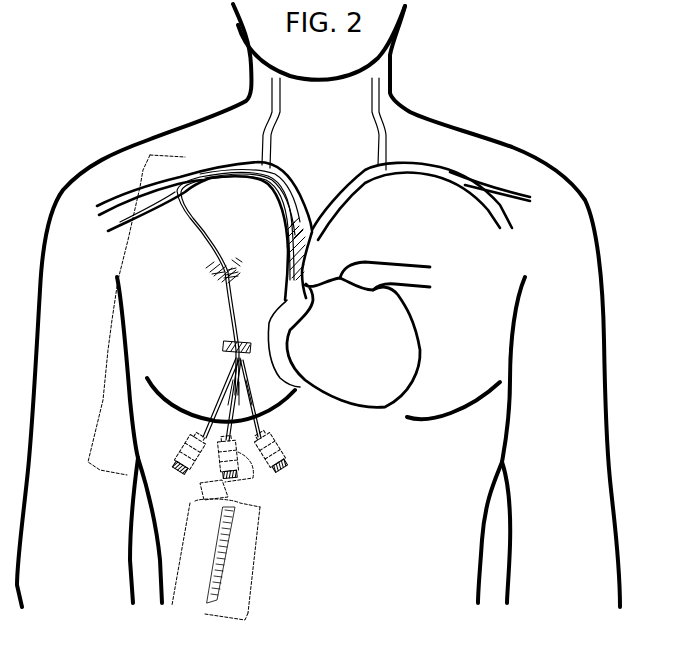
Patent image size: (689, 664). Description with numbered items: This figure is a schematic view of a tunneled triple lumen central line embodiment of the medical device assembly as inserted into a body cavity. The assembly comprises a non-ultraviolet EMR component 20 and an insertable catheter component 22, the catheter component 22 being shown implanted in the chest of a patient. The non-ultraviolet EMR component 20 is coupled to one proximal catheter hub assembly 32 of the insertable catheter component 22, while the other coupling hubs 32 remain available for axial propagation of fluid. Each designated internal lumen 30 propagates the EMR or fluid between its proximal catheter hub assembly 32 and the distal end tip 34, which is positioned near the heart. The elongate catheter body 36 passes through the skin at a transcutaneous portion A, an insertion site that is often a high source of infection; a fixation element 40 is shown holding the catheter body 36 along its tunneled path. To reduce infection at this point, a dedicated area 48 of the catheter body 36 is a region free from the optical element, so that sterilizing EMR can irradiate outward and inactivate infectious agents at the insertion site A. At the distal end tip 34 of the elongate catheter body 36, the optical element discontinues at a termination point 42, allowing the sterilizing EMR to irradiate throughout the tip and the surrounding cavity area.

The non-ultraviolet EMR component 20 is at (262, 548).
The insertable catheter component 22 is at (110, 347).
The internal lumen 30 is at (242, 392).
The proximal catheter hub assembly 32 is at (178, 440).
The distal end tip 34 is at (314, 252).
The elongate catheter body 36 is at (230, 303).
The fixation clip 40 is at (235, 365).
The termination point 42 is at (280, 233).
The dedicated area 48 is at (228, 270).
The transcutaneous portion A is at (215, 278).